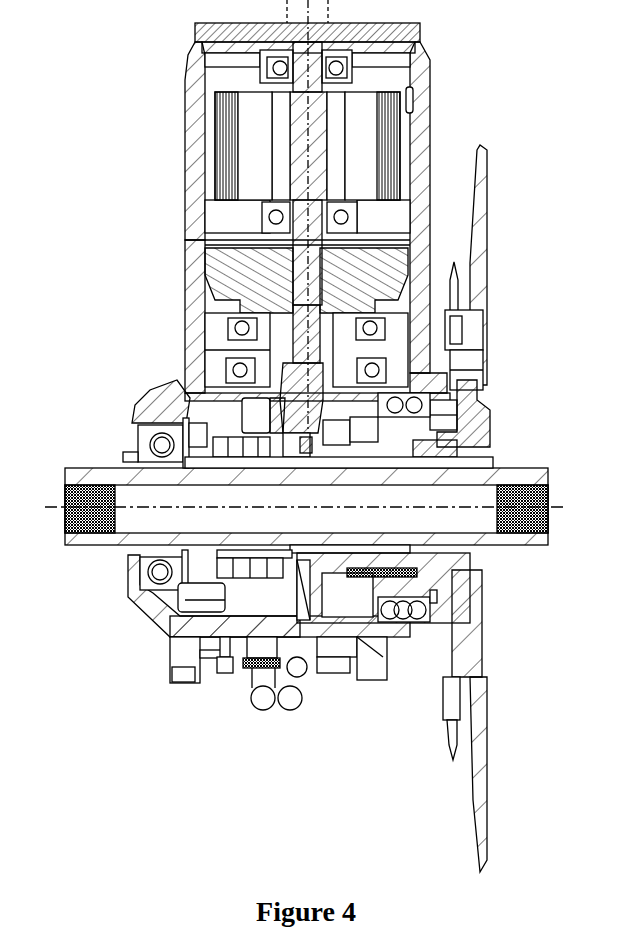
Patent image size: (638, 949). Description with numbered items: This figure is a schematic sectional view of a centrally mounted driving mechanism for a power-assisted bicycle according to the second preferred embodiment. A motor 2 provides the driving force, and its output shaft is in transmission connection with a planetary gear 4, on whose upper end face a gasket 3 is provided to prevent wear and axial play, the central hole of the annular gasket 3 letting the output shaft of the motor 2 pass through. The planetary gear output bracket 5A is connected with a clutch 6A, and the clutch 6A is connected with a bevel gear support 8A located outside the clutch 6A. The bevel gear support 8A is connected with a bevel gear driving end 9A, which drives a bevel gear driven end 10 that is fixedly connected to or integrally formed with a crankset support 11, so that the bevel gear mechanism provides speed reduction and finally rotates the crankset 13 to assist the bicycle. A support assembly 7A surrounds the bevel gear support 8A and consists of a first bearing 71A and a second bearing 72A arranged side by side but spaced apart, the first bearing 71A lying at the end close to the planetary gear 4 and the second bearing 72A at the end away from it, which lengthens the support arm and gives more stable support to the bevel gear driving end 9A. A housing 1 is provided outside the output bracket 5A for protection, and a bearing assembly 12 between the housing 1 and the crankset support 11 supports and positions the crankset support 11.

The housing 1 is at (418, 118).
The motor 2 is at (330, 185).
The gasket 3 is at (406, 248).
The planetary gear 4 is at (197, 258).
The planetary gear output bracket 5A is at (410, 298).
The clutch 6A is at (145, 330).
The support assembly 7A is at (139, 349).
The first bearing 71A is at (235, 330).
The second bearing 72A is at (235, 370).
The bevel gear support 8A is at (407, 350).
The bevel gear driving end 9A is at (407, 372).
The bevel gear driven end 10 is at (470, 398).
The crankset support 11 is at (465, 428).
The bearing assembly 12 is at (458, 627).
The crankset 13 is at (463, 662).